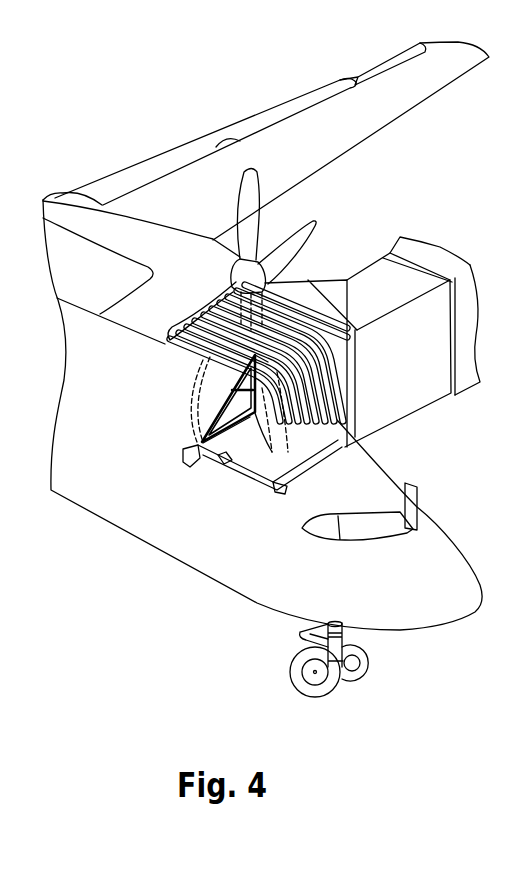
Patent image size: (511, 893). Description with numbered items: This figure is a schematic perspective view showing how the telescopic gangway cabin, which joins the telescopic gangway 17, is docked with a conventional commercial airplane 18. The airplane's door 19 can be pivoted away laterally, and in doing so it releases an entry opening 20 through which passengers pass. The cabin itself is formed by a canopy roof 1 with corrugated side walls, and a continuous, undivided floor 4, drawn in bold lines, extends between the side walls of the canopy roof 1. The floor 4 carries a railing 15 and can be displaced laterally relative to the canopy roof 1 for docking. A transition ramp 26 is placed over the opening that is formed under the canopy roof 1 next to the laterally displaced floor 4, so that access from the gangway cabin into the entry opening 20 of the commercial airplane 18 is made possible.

The canopy roof 1 is at (292, 268).
The floor 4 is at (307, 450).
The railing 15 is at (213, 407).
The telescopic gangway 17 is at (443, 224).
The commercial airplane 18 is at (165, 522).
The door 19 is at (267, 453).
The entry opening 20 is at (222, 465).
The transition ramp 26 is at (358, 363).